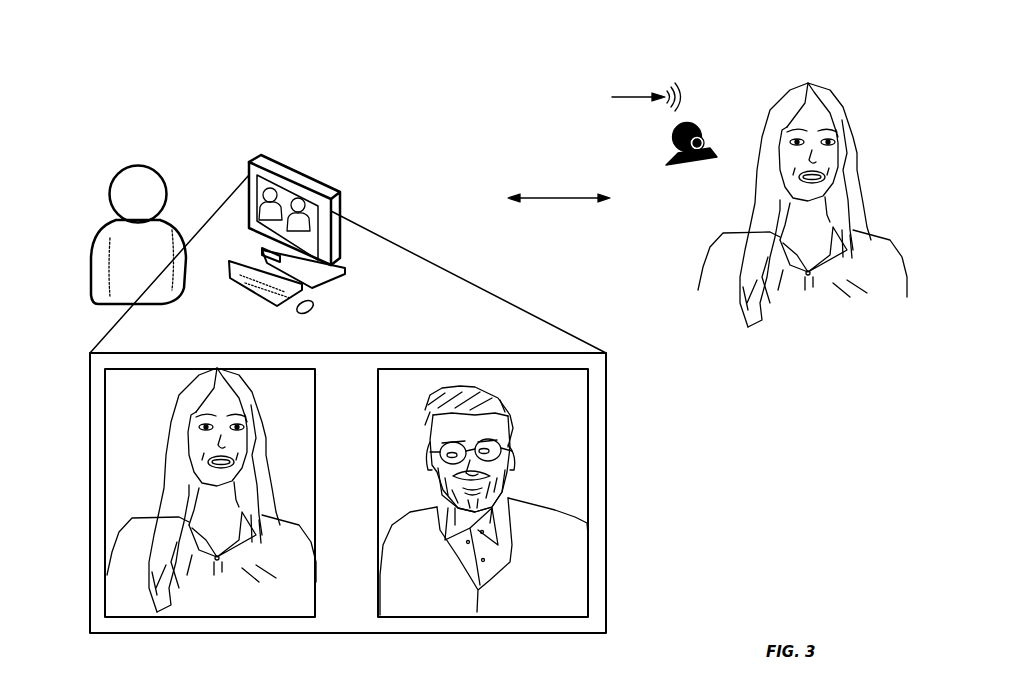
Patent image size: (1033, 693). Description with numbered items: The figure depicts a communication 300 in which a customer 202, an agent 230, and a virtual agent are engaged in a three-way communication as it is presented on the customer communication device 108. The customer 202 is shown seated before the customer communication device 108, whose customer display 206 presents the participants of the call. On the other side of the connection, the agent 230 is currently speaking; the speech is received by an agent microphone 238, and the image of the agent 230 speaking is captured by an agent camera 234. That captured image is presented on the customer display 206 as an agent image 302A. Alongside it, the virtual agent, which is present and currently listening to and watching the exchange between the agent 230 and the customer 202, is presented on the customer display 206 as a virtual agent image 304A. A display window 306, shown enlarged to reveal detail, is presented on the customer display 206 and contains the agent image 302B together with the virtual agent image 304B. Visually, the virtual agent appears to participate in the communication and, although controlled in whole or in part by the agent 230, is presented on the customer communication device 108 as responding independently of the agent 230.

The communication 300 is at (873, 48).
The customer communication device 108 is at (392, 210).
The customer 202 is at (93, 248).
The customer display 206 is at (332, 193).
The agent image 302A is at (270, 189).
The virtual agent image 304A is at (305, 203).
The agent 230 is at (855, 125).
The agent camera 234 is at (698, 122).
The agent microphone 238 is at (640, 95).
The display window 306 is at (606, 395).
The agent image 302B is at (105, 424).
The virtual agent image 304B is at (590, 476).